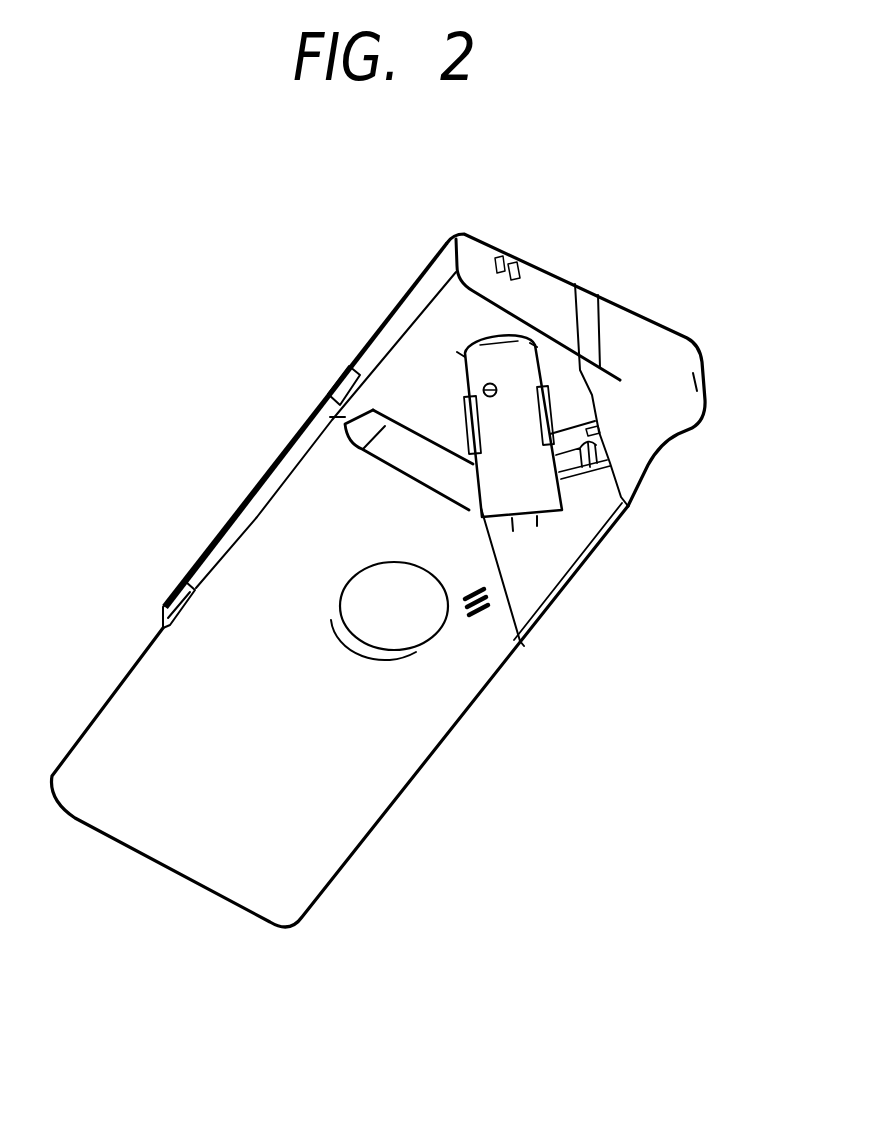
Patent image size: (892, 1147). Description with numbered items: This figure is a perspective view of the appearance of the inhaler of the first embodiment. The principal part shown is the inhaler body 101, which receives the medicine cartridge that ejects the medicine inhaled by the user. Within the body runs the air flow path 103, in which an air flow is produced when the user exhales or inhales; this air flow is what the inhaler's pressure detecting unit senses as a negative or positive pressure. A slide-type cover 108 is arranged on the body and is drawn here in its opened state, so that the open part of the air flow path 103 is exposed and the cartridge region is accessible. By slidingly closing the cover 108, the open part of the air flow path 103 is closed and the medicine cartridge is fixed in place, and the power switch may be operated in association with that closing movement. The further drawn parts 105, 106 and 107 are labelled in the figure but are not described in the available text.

The inhaler body 101 is at (263, 473).
The air flow path 103 is at (473, 490).
The lid 105 is at (623, 347).
The arm 106 is at (337, 387).
The lock member 107 is at (597, 435).
The slide-type cover 108 is at (407, 756).